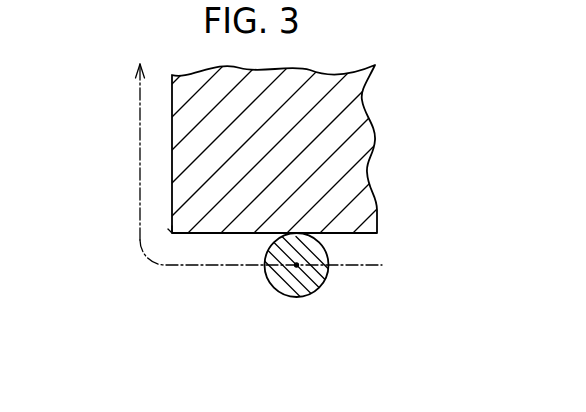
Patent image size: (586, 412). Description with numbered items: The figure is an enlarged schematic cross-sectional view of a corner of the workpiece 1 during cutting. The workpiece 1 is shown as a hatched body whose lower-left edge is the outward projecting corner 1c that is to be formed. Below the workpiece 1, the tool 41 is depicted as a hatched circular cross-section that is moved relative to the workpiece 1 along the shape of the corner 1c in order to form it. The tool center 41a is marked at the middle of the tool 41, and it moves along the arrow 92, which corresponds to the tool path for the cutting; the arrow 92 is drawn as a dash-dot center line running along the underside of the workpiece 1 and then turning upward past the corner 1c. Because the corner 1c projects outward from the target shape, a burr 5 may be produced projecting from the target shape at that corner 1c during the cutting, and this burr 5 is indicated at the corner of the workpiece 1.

The workpiece 1 is at (352, 118).
The corner 1c is at (183, 220).
The burr 5 is at (167, 228).
The tool 41 is at (326, 274).
The tool center 41a is at (297, 265).
The arrow 92 is at (140, 120).